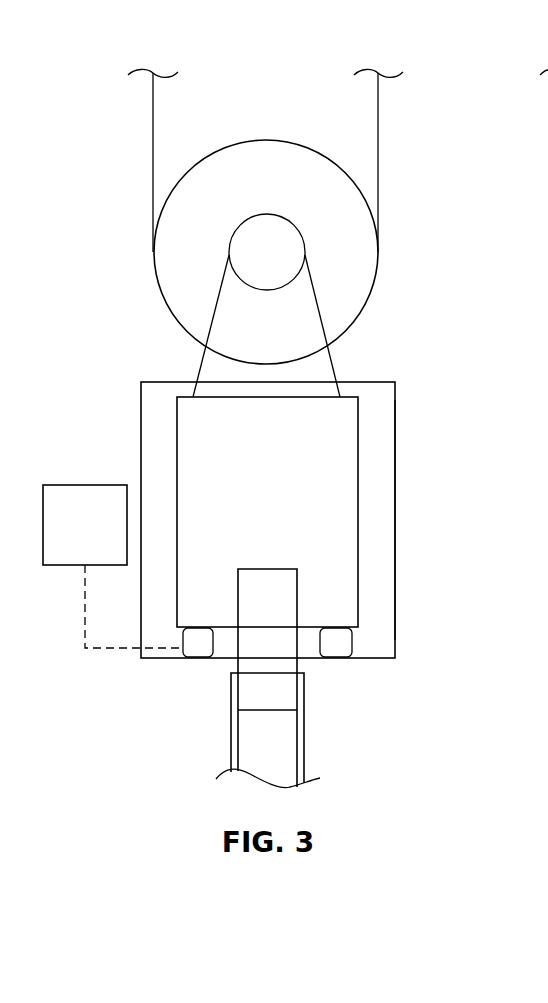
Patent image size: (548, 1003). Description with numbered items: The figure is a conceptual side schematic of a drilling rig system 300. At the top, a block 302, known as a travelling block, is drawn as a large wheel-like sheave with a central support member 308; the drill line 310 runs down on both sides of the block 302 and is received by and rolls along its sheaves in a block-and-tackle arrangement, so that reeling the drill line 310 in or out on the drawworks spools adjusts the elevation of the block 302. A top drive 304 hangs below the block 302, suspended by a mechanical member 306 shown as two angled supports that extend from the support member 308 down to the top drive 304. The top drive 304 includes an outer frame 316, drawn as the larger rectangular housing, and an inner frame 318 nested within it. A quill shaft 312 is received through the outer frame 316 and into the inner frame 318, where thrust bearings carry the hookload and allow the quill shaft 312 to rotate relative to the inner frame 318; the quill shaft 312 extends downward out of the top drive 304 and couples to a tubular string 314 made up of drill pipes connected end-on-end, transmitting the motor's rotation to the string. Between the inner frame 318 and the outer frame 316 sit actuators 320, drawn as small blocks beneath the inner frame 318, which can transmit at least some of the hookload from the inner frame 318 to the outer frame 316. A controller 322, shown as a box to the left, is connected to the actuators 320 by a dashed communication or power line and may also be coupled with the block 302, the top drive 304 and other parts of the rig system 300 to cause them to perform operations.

The drilling rig system 300 is at (127, 44).
The block 302 is at (368, 300).
The top drive 304 is at (395, 430).
The mechanical member 306 is at (340, 375).
The support member 308 is at (267, 214).
The drill line 310 is at (378, 135).
The quill shaft 312 is at (297, 665).
The tubular string 314 is at (235, 742).
The outer frame 316 is at (395, 542).
The inner frame 318 is at (358, 498).
The actuator 320 is at (198, 660).
The controller 322 is at (63, 537).